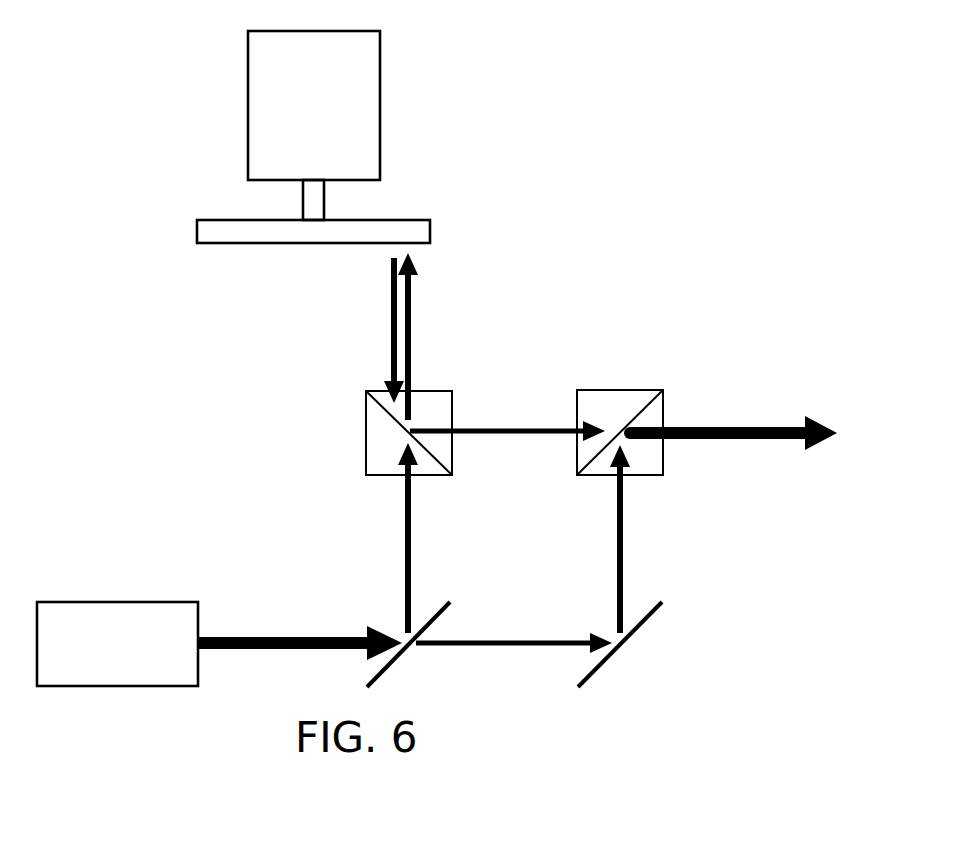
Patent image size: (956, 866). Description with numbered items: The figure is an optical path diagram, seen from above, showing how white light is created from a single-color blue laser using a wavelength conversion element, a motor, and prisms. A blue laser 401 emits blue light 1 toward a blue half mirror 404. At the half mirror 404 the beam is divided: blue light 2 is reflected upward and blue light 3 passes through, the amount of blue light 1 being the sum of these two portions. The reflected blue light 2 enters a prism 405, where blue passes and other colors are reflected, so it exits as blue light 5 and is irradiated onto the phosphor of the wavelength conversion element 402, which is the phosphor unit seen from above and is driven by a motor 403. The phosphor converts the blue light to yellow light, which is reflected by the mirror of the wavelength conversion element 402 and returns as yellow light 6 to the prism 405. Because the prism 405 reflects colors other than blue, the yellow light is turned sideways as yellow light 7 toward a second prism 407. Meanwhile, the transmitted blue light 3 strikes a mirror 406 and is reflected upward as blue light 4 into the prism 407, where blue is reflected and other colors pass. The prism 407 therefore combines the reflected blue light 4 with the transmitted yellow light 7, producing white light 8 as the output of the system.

The blue laser 401 is at (117, 606).
The wavelength conversion element 402 is at (300, 209).
The motor 403 is at (283, 105).
The blue half mirror 404 is at (422, 649).
The prism 405 is at (377, 427).
The mirror 406 is at (646, 644).
The prism 407 is at (620, 386).
The blue light 1 is at (302, 638).
The blue light 2 is at (407, 543).
The blue light 3 is at (538, 640).
The blue light 4 is at (617, 548).
The blue light 5 is at (410, 347).
The yellow light 6 is at (392, 347).
The yellow light 7 is at (475, 425).
The white light 8 is at (757, 425).